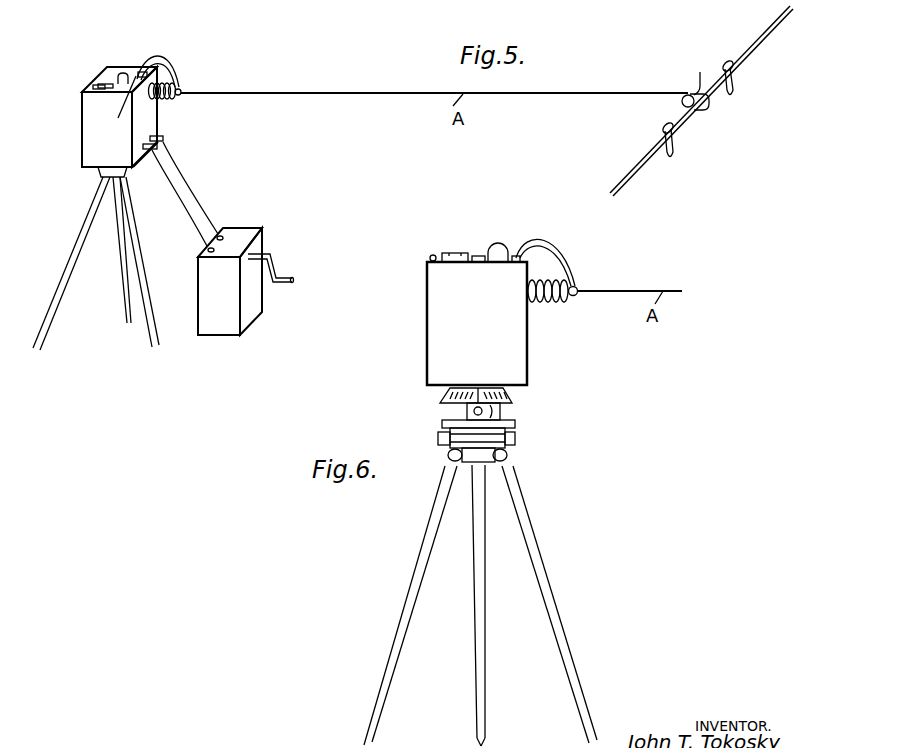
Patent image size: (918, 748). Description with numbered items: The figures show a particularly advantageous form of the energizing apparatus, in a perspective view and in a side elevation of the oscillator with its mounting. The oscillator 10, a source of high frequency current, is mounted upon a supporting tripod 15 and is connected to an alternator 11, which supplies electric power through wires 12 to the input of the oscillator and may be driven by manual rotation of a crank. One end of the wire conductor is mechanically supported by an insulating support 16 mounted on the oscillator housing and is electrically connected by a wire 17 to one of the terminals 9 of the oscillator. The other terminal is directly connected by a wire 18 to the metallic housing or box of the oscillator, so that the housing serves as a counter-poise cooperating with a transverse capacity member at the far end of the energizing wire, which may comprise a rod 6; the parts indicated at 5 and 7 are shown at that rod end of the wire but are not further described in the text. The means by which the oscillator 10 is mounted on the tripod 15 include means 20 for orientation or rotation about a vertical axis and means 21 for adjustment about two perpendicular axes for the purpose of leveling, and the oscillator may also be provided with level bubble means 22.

In FIG. 5, the clamp 5 is at (680, 106).
In FIG. 5, the rod 6 is at (755, 40).
In FIG. 5, the hanger 7 is at (738, 93).
In FIG. 5, the terminal means 9 is at (117, 105).
In FIG. 5, the oscillator 10 is at (92, 134).
In FIG. 6, the oscillator 10 is at (460, 329).
In FIG. 5, the alternator 11 is at (244, 241).
In FIG. 5, the wires 12 is at (180, 193).
In FIG. 5, the supporting tripod 15 is at (93, 203).
In FIG. 6, the supporting tripod 15 is at (530, 548).
In FIG. 5, the insulating support 16 is at (176, 96).
In FIG. 5, the wire 17 is at (172, 66).
In FIG. 5, the wire 18 is at (127, 74).
In FIG. 6, the orientation means 20 is at (507, 394).
In FIG. 6, the leveling adjustment means 21 is at (468, 412).
In FIG. 5, the level bubble means 22 is at (95, 80).
In FIG. 6, the level bubble means 22 is at (448, 249).